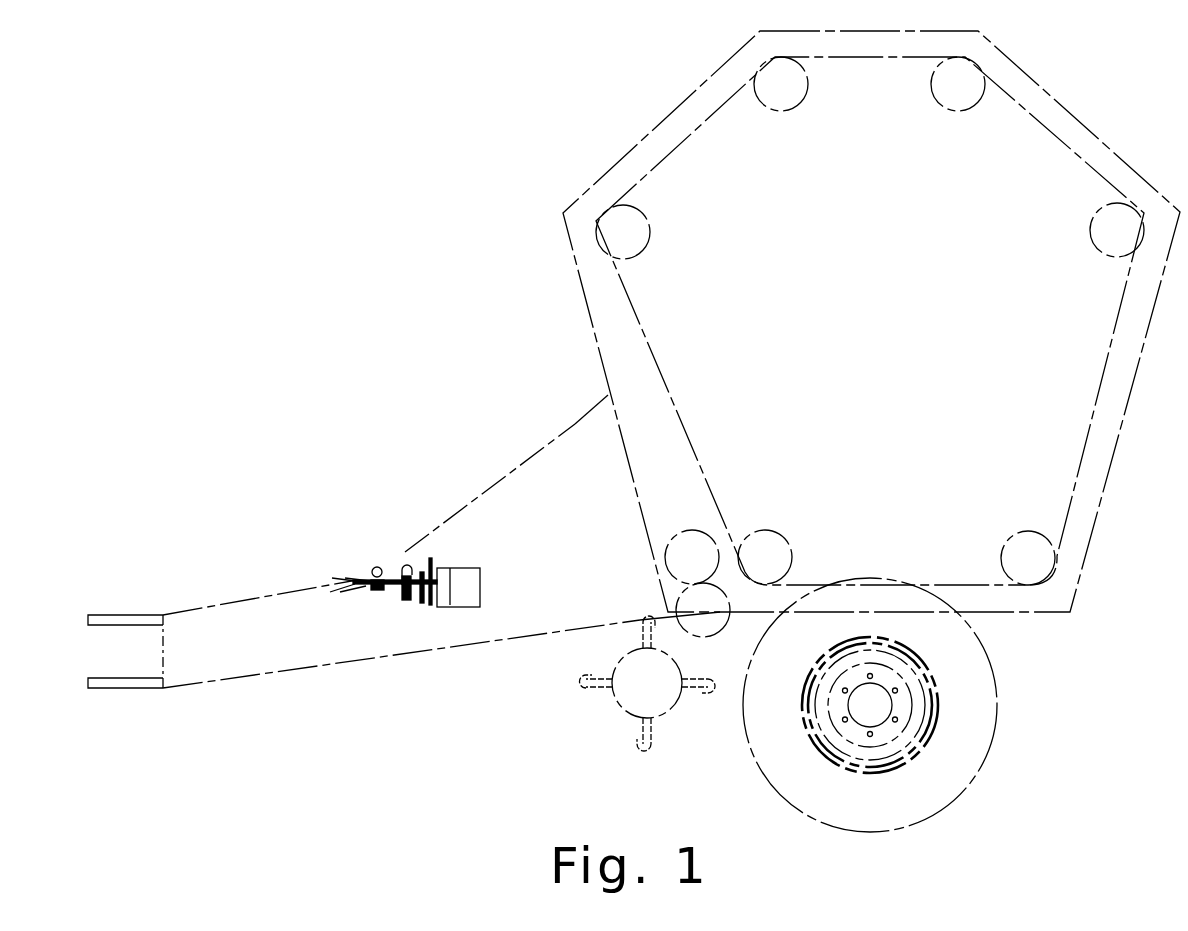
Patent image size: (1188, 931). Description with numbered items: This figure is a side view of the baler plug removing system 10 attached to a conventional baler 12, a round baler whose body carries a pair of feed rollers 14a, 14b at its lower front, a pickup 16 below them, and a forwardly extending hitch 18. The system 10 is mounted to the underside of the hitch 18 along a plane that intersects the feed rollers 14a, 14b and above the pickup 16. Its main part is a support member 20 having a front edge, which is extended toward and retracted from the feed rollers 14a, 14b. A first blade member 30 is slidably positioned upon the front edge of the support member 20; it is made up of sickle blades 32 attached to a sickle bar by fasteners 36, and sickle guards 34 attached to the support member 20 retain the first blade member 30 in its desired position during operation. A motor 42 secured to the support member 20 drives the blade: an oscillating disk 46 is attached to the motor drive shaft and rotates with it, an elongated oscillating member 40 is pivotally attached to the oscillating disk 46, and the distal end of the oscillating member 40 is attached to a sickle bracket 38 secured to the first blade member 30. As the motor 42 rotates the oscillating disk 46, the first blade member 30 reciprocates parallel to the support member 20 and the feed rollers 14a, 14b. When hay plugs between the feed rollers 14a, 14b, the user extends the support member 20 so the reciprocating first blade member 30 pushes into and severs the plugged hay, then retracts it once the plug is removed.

The baler plug removing system 10 is at (345, 503).
The conventional baler 12 is at (676, 96).
The feed roller 14a is at (690, 550).
The feed roller 14b is at (697, 610).
The pickup 16 is at (640, 698).
The hitch 18 is at (212, 658).
The support member 20 is at (386, 588).
The first blade member 30 is at (376, 580).
The sickle blades 32 is at (348, 579).
The sickle guards 34 is at (378, 566).
The fasteners 36 is at (342, 592).
The sickle bracket 38 is at (412, 570).
The oscillating member 40 is at (402, 598).
The motor 42 is at (470, 576).
The oscillating disk 46 is at (422, 604).